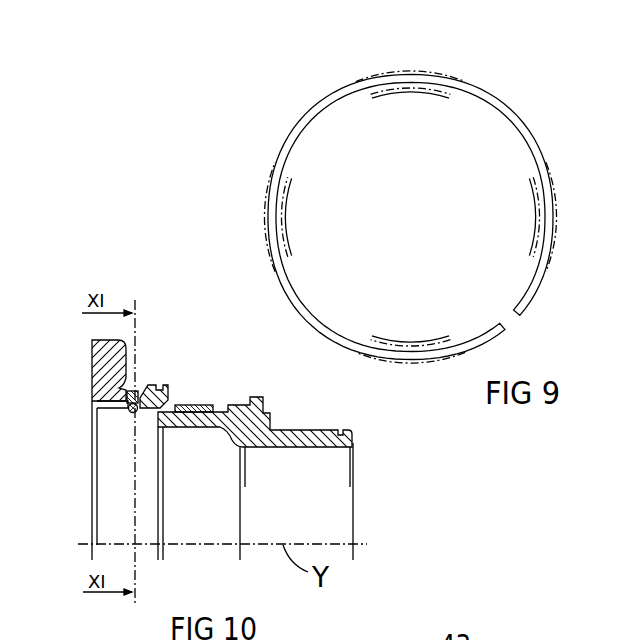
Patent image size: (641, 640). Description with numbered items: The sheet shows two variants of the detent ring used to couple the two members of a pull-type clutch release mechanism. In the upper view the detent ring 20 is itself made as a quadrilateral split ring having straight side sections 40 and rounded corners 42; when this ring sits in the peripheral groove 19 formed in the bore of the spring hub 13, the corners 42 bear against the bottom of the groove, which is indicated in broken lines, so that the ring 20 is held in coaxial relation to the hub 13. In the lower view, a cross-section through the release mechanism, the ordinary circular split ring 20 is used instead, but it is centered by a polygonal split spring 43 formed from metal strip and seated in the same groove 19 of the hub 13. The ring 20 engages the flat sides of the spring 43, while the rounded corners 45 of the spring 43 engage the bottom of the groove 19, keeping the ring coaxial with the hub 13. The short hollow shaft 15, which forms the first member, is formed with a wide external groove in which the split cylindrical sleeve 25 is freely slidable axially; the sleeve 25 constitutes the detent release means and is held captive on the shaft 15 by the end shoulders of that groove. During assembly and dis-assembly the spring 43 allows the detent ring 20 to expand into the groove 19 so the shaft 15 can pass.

In FIG. 10, the spring hub 13 is at (103, 365).
In FIG. 10, the shaft 15 is at (205, 418).
In FIG. 9, the peripheral groove 19 is at (413, 189).
In FIG. 10, the peripheral groove 19 is at (96, 402).
In FIG. 10, the detent 20 is at (131, 413).
In FIG. 10, the split cylindrical sleeve 25 is at (192, 405).
In FIG. 9, the straight side sections 40 is at (425, 74).
In FIG. 9, the rounded corners 42 is at (319, 107).
In FIG. 10, the polygonal split spring 43 is at (138, 392).
In FIG. 10, the rounded corners 45 is at (365, 633).